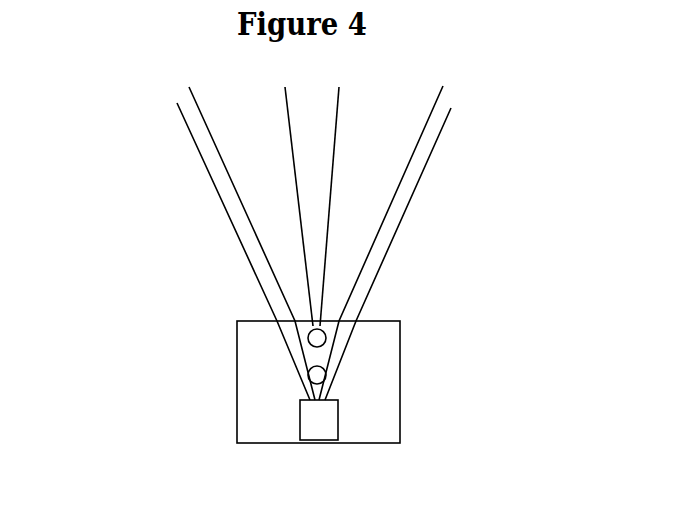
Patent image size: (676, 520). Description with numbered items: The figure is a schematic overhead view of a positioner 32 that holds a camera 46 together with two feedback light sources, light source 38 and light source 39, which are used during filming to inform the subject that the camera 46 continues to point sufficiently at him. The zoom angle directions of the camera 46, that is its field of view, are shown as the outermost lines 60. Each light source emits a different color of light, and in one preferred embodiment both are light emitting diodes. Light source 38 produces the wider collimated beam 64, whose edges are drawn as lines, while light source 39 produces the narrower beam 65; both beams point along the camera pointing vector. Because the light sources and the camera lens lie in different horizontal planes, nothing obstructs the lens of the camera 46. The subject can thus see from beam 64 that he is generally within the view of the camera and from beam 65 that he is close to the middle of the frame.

The zoom angle directions 60 is at (187, 133).
The collimated light beam 64 is at (243, 210).
The narrower beam 65 is at (288, 130).
The positioner 32 is at (400, 372).
The light source 39 is at (310, 347).
The light source 38 is at (308, 380).
The camera 46 is at (318, 432).